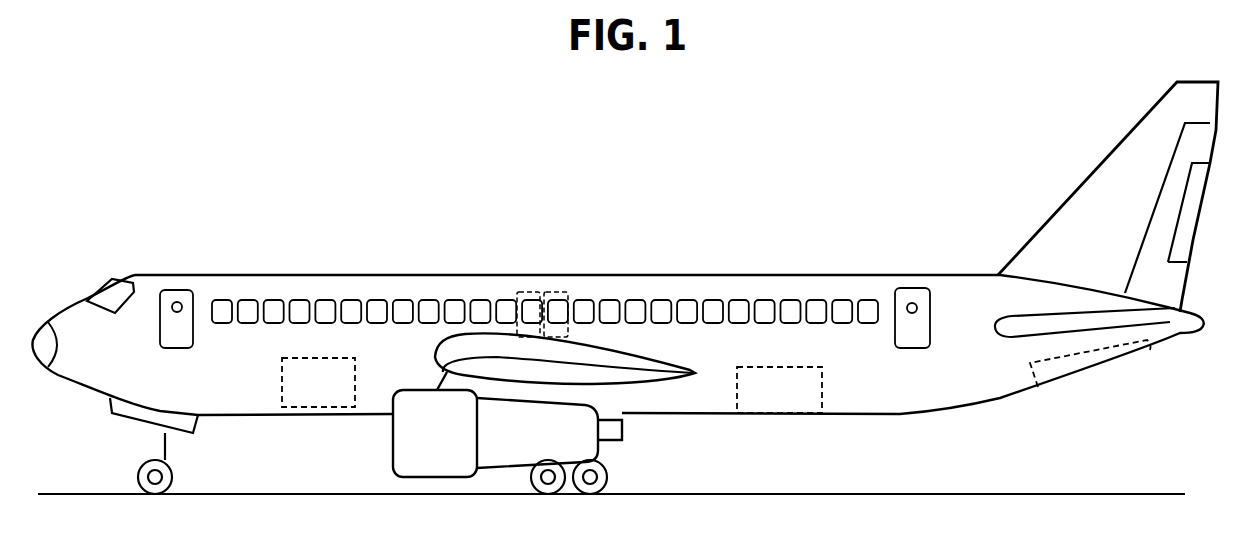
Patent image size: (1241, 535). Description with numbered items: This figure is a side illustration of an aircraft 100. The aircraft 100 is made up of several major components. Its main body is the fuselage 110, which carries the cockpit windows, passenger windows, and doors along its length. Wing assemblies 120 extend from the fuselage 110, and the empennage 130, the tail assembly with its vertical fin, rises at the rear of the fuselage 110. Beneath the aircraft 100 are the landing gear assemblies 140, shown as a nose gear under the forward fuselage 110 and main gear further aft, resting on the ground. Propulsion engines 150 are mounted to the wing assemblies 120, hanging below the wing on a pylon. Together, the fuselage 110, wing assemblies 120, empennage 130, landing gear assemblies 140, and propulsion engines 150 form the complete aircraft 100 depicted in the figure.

The aircraft 100 is at (140, 113).
The fuselage 110 is at (378, 275).
The wing assemblies 120 is at (653, 387).
The empennage 130 is at (1132, 128).
The landing gear assemblies 140 is at (160, 458).
The propulsion engines 150 is at (392, 443).